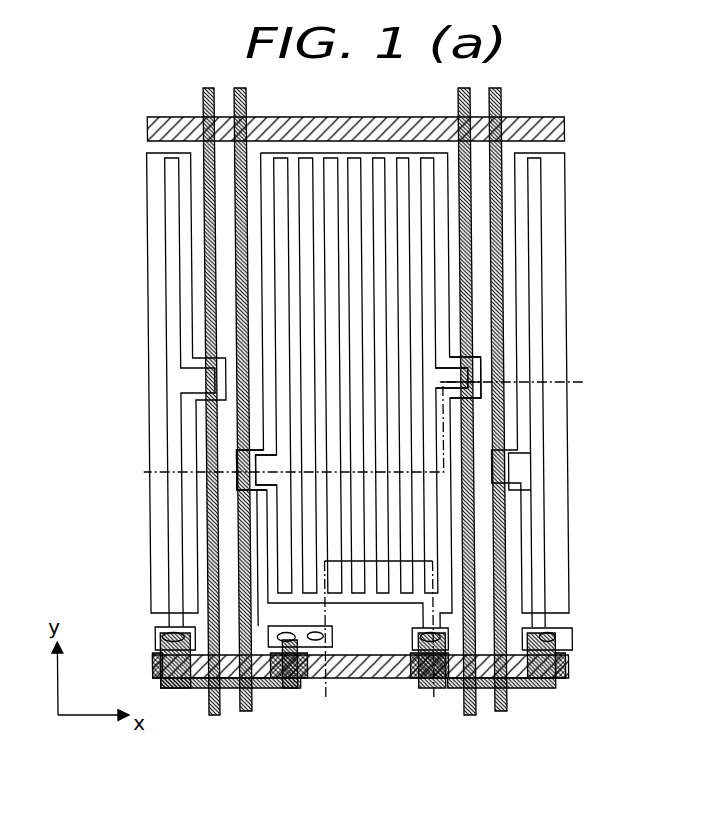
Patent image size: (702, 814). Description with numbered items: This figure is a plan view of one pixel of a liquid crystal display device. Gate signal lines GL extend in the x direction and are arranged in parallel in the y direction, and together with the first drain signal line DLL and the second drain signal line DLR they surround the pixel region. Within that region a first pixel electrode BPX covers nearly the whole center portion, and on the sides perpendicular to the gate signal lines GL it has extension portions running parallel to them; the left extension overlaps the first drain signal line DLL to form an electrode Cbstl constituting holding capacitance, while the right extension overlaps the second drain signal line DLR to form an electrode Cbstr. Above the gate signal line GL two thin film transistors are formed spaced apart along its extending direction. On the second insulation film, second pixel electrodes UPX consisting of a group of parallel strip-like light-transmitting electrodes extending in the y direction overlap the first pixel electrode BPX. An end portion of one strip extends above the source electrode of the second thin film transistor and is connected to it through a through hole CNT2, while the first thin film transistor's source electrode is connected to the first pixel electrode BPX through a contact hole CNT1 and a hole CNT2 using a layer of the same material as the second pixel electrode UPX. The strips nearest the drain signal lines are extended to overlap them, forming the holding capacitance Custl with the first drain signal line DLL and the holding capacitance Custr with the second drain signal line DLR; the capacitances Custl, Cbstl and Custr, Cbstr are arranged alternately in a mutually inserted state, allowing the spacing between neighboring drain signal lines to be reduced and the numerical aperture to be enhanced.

The gate signal line GL is at (565, 128).
The second drain signal line DLR is at (205, 100).
The first drain signal line DLL is at (246, 100).
The second pixel electrode UPX is at (273, 556).
The first pixel electrode BPX is at (263, 579).
The holding capacitance electrode Cbstr is at (476, 356).
The holding capacitance Custr is at (478, 381).
The holding capacitance electrode Cbstl is at (255, 450).
The holding capacitance Custl is at (233, 466).
The contact hole CNT1 is at (285, 647).
The through hole CNT2 is at (417, 635).